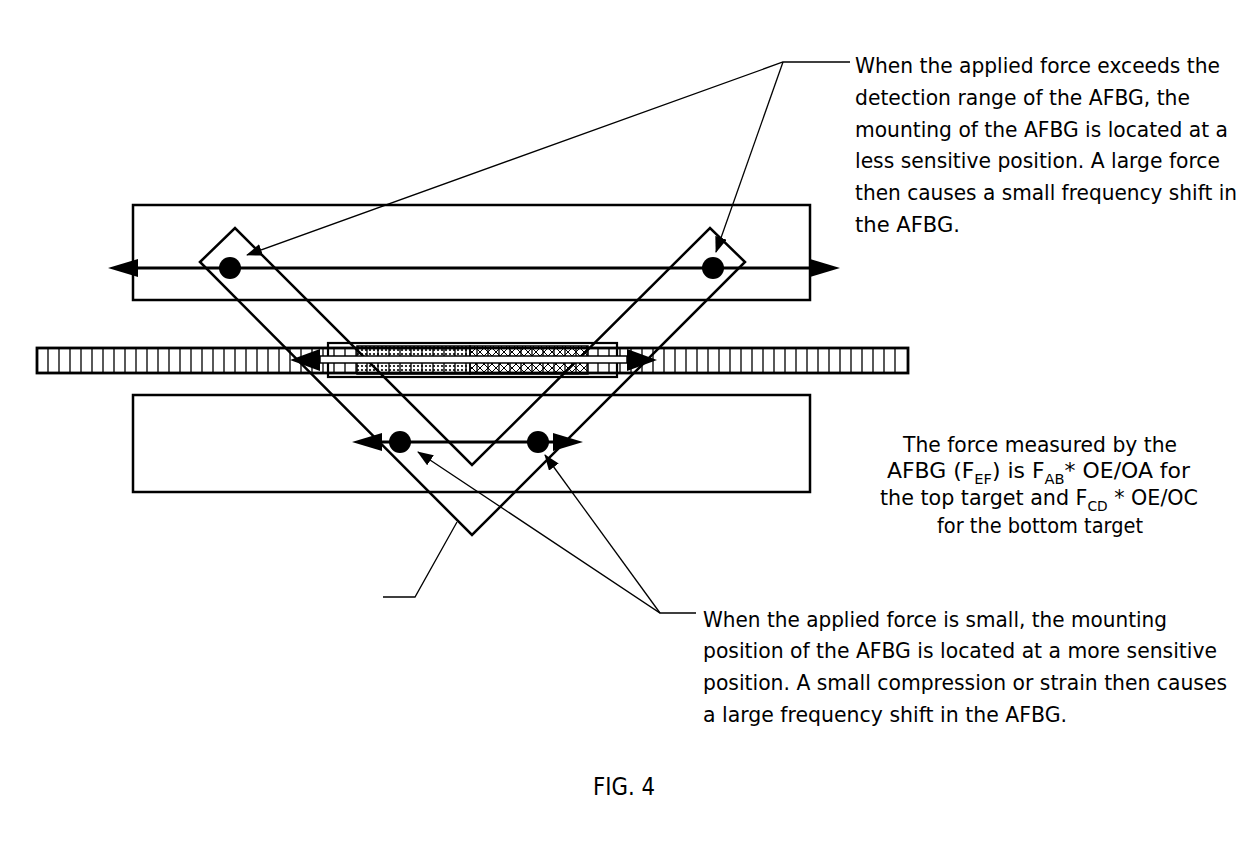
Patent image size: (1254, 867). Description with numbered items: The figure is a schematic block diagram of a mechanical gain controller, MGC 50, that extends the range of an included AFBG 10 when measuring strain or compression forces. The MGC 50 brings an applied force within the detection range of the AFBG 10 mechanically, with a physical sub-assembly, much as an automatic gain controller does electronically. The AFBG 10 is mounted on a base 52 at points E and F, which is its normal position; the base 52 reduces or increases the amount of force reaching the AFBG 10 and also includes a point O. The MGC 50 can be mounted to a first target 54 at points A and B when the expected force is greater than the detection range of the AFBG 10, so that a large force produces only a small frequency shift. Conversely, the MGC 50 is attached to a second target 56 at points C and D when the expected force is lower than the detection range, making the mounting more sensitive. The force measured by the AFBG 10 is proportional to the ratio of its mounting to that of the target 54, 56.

The AFBG 10 is at (549, 375).
The mechanical gain controller 50 is at (379, 124).
The base 52 is at (472, 535).
The first target 54 is at (637, 244).
The second target 56 is at (222, 452).